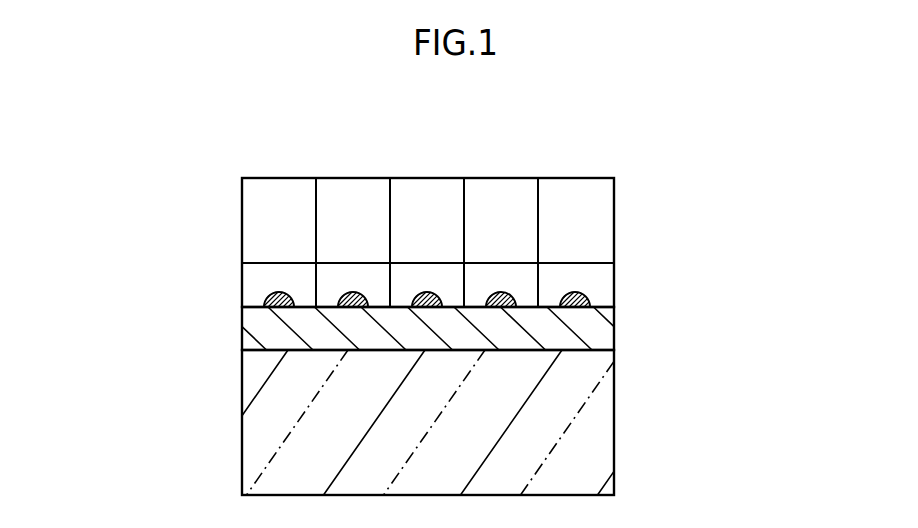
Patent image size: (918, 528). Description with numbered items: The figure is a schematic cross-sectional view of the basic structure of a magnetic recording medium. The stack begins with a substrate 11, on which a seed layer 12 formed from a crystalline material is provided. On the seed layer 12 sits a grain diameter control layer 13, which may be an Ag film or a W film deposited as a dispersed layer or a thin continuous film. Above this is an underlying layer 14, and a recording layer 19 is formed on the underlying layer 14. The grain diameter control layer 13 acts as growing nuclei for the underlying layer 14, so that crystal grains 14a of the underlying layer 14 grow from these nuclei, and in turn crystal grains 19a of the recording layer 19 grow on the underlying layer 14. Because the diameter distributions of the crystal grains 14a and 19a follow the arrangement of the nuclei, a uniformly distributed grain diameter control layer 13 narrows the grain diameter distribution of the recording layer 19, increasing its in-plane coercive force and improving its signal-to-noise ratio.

The substrate 11 is at (614, 415).
The seed layer 12 is at (614, 328).
The grain diameter control layer 13 is at (353, 292).
The underlying layer 14 is at (242, 286).
The crystal grains of the underlying layer 14a is at (273, 263).
The recording layer 19 is at (614, 182).
The crystal grains of the recording layer 19a is at (279, 178).